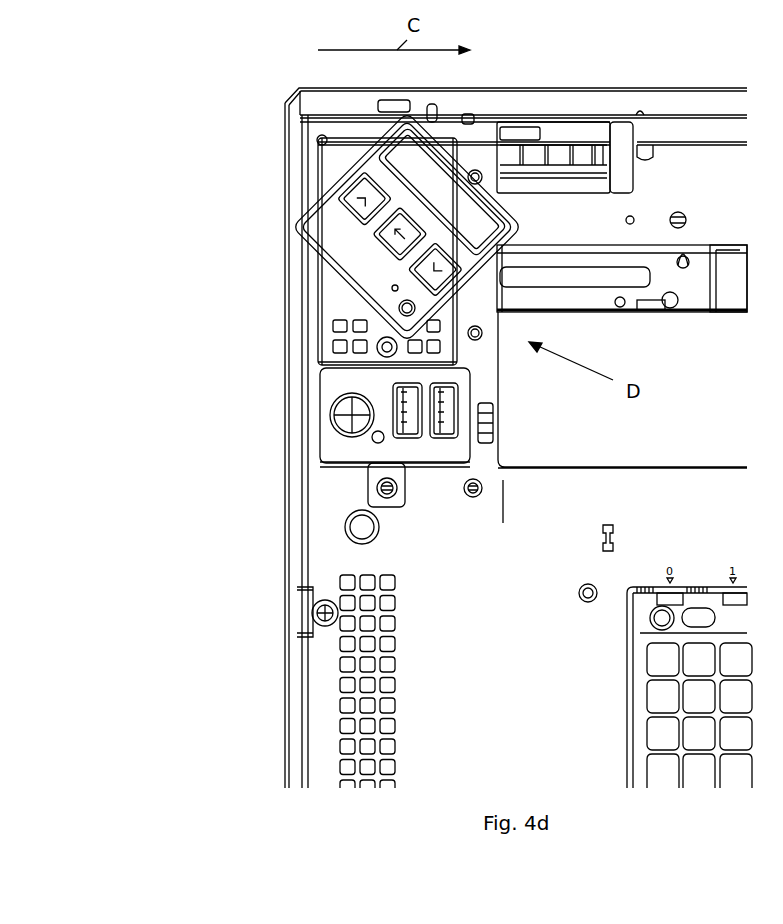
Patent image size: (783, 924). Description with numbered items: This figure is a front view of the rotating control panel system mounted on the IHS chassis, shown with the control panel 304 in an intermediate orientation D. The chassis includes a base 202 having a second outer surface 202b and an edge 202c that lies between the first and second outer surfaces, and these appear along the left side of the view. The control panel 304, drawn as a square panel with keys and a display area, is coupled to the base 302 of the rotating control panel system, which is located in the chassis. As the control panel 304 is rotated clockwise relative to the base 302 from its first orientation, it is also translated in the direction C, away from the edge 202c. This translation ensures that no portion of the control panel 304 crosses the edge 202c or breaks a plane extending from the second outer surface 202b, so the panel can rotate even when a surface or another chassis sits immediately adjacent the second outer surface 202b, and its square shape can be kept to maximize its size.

The base 202 is at (297, 96).
The second outer surface 202b is at (282, 448).
The edge 202c is at (290, 283).
The base 302 is at (347, 302).
The control panel 304 is at (328, 225).